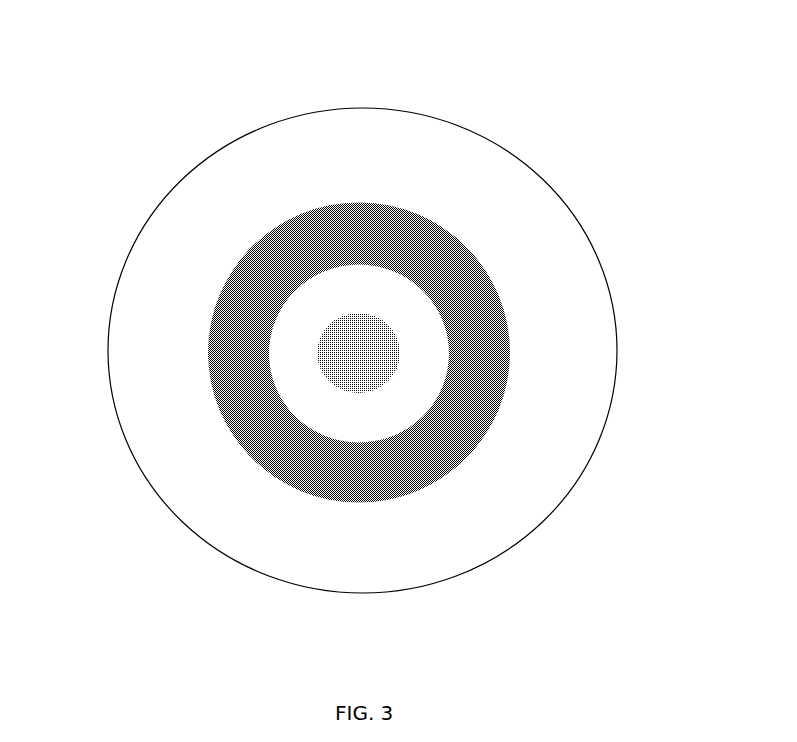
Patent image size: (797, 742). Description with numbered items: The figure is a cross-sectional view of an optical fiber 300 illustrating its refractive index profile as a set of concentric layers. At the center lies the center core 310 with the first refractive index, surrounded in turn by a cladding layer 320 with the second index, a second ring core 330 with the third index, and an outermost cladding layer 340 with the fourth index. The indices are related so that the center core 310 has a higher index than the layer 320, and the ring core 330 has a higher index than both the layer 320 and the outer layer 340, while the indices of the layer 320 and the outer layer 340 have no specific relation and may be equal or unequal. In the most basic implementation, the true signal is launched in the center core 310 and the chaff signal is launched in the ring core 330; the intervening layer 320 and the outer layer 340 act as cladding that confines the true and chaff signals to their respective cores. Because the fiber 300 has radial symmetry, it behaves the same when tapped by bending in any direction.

The optical fiber 300 is at (692, 112).
The center core layer n1 310 is at (377, 345).
The layer n2 320 is at (308, 313).
The ring core layer n3 330 is at (472, 407).
The layer n4 340 is at (117, 388).